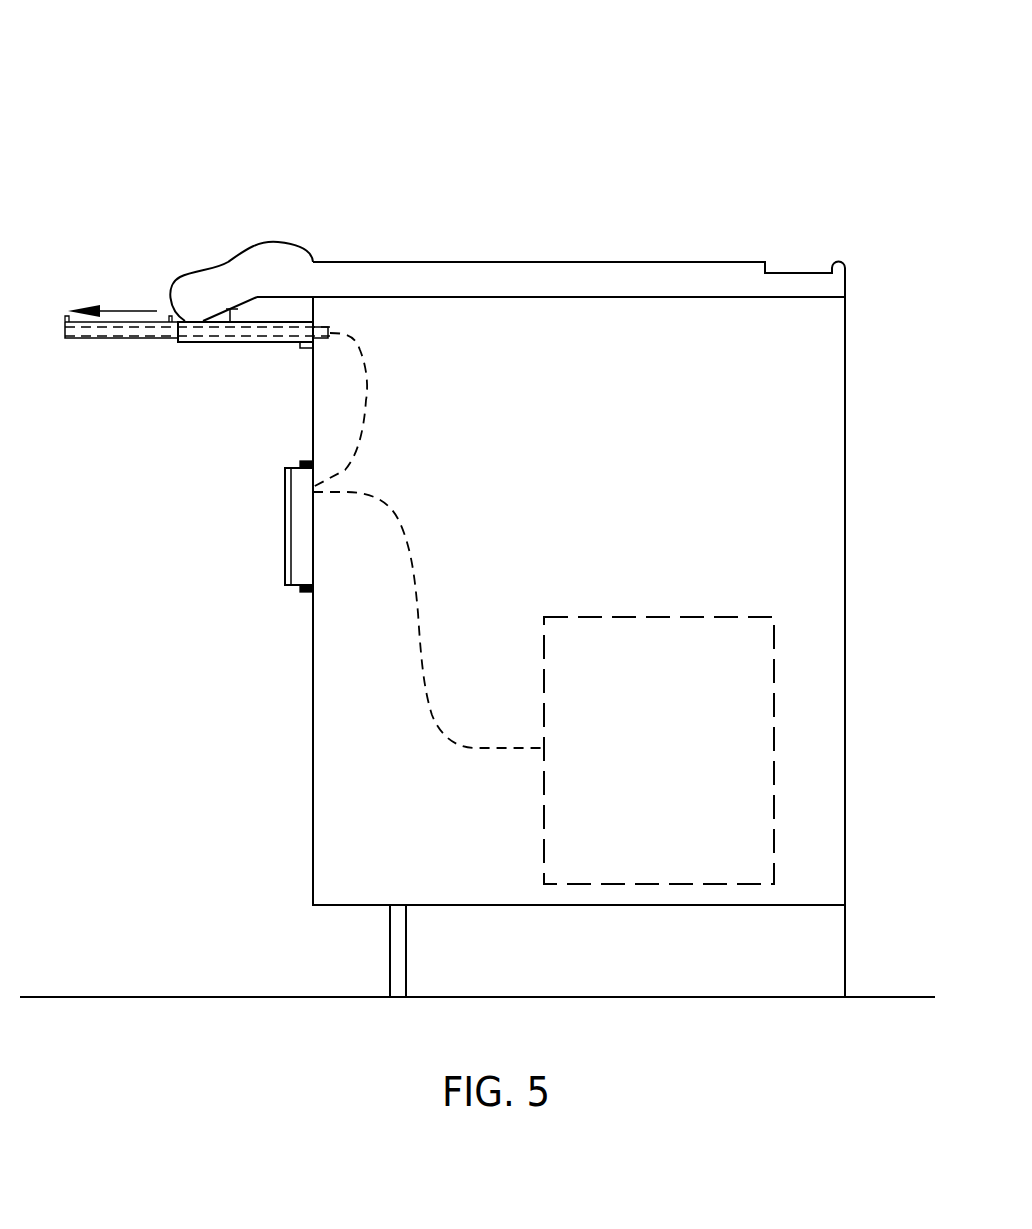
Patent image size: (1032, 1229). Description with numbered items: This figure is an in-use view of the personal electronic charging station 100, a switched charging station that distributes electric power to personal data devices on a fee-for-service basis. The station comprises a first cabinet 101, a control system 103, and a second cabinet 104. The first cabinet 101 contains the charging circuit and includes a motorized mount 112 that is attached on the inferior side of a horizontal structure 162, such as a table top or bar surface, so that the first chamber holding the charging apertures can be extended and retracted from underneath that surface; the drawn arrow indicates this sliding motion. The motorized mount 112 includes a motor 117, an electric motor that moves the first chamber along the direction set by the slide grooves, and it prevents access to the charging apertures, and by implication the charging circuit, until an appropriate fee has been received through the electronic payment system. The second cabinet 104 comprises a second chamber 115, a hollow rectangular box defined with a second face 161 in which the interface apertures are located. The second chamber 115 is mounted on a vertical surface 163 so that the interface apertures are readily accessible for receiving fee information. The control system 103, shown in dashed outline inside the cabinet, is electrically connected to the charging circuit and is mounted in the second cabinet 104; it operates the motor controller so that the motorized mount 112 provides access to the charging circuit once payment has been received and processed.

The personal electronic charging station 100 is at (64, 152).
The first cabinet 101 is at (120, 338).
The control system 103 is at (625, 617).
The second cabinet 104 is at (215, 523).
The motorized mount 112 is at (220, 391).
The second chamber 115 is at (305, 535).
The motor 117 is at (288, 332).
The second face 161 is at (285, 550).
The horizontal structure 162 is at (372, 283).
The vertical surface 163 is at (313, 795).